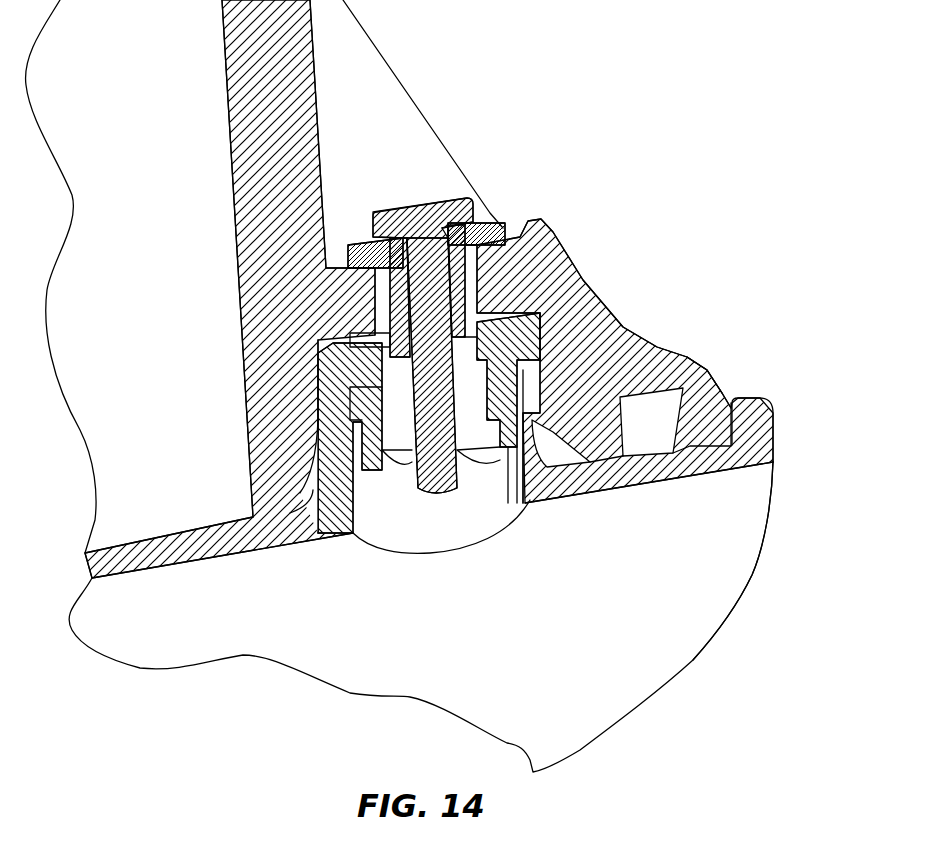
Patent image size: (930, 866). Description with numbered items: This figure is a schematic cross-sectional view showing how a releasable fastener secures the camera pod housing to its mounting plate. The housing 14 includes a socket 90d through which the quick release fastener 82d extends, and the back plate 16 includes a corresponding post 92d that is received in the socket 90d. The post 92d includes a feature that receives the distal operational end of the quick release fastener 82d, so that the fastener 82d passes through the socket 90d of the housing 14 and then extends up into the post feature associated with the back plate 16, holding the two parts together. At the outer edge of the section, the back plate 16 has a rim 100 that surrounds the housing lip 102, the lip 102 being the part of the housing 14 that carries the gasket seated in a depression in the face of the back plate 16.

The housing 14 is at (623, 323).
The back plate 16 is at (733, 507).
The quick release fastener 82d is at (432, 492).
The socket 90d is at (548, 350).
The post 92d is at (532, 427).
The rim 100 is at (757, 413).
The housing lip 102 is at (709, 398).